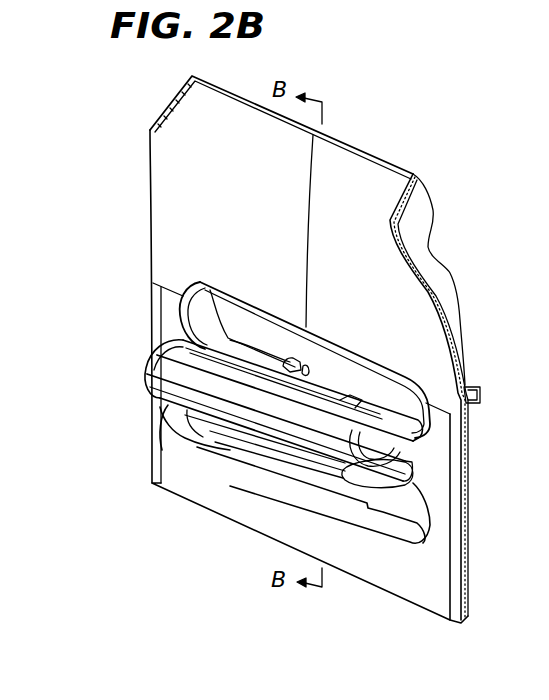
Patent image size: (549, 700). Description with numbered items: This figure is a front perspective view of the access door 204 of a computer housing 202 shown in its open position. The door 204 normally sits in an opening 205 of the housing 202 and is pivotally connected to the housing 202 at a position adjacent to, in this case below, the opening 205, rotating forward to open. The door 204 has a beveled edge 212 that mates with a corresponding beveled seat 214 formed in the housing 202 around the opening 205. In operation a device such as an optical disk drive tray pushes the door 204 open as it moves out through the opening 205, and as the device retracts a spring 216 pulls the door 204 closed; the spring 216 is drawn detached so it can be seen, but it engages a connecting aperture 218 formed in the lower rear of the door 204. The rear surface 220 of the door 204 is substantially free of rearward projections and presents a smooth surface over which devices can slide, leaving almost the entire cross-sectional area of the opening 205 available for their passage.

The computer housing 202 is at (172, 176).
The access door 204 is at (161, 440).
The opening 205 is at (279, 346).
The beveled edge 212 is at (141, 390).
The beveled seat 214 is at (186, 298).
The spring 216 is at (310, 373).
The connecting aperture 218 is at (300, 362).
The rear surface 220 is at (280, 402).